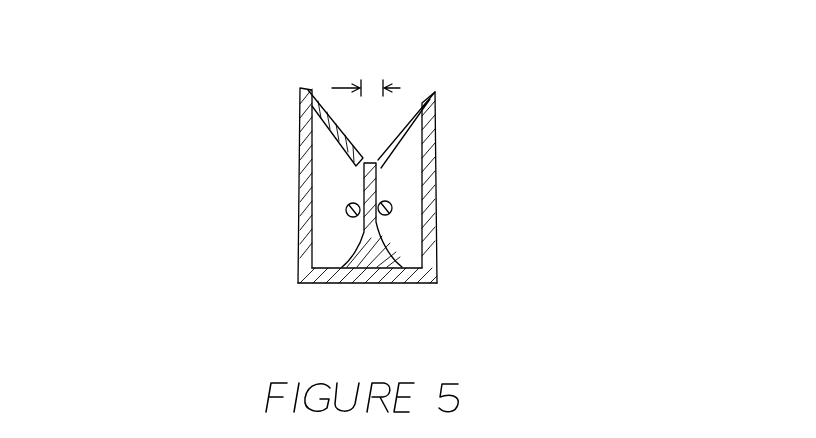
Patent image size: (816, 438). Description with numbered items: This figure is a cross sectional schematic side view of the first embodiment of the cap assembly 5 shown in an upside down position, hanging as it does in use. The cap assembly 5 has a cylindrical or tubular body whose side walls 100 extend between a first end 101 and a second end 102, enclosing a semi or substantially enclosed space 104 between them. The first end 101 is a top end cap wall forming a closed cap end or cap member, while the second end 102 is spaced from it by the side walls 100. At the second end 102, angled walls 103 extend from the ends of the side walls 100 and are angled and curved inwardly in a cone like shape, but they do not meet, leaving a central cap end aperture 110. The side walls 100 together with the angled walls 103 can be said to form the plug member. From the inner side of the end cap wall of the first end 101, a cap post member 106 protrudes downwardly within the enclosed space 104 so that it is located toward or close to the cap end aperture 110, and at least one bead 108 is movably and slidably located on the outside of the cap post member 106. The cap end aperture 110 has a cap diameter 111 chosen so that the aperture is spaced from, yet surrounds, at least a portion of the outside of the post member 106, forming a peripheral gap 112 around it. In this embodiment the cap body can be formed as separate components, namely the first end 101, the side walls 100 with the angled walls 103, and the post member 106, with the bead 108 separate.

The cap assembly 5 is at (318, 123).
The side walls 100 is at (408, 170).
The first end 101 is at (380, 294).
The second end 102 is at (270, 104).
The angled walls 103 is at (459, 101).
The enclosed space 104 is at (454, 253).
The cap post member 106 is at (464, 166).
The bead 108 is at (447, 215).
The cap end aperture 110 is at (329, 72).
The cap diameter 111 is at (366, 71).
The peripheral gap 112 is at (282, 249).